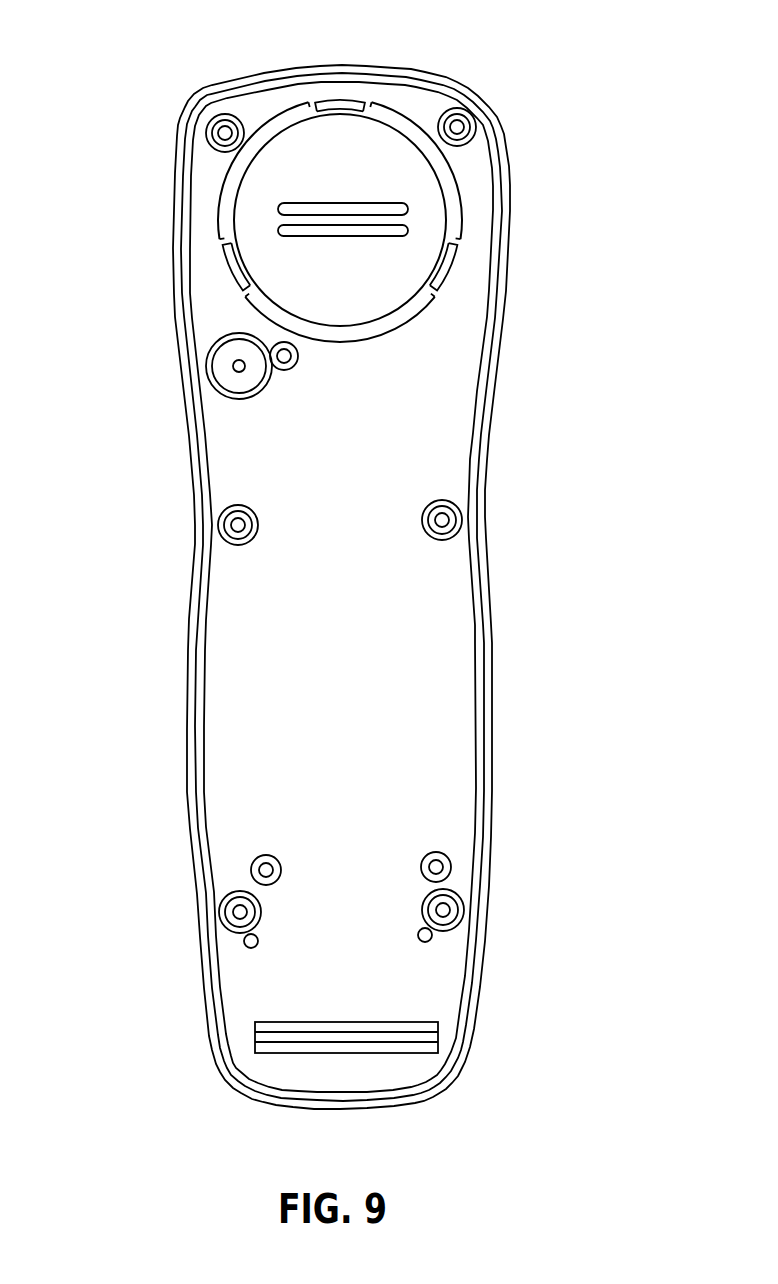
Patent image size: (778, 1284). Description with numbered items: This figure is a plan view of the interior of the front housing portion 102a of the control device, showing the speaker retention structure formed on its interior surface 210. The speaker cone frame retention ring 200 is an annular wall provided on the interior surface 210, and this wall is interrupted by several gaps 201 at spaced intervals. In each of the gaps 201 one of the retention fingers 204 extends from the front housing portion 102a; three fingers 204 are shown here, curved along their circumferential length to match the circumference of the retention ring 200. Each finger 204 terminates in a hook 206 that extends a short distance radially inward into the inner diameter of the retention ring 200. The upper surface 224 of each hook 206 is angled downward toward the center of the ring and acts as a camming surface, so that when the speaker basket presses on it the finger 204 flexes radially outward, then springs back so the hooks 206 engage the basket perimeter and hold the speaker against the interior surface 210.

The front housing portion 102a is at (472, 173).
The speaker cone frame retention ring 200 is at (258, 121).
The gaps 201 is at (360, 101).
The retention fingers 204 is at (333, 100).
The hook 206 is at (222, 250).
The upper surface 224 is at (343, 110).
The interior surface 210 is at (420, 730).